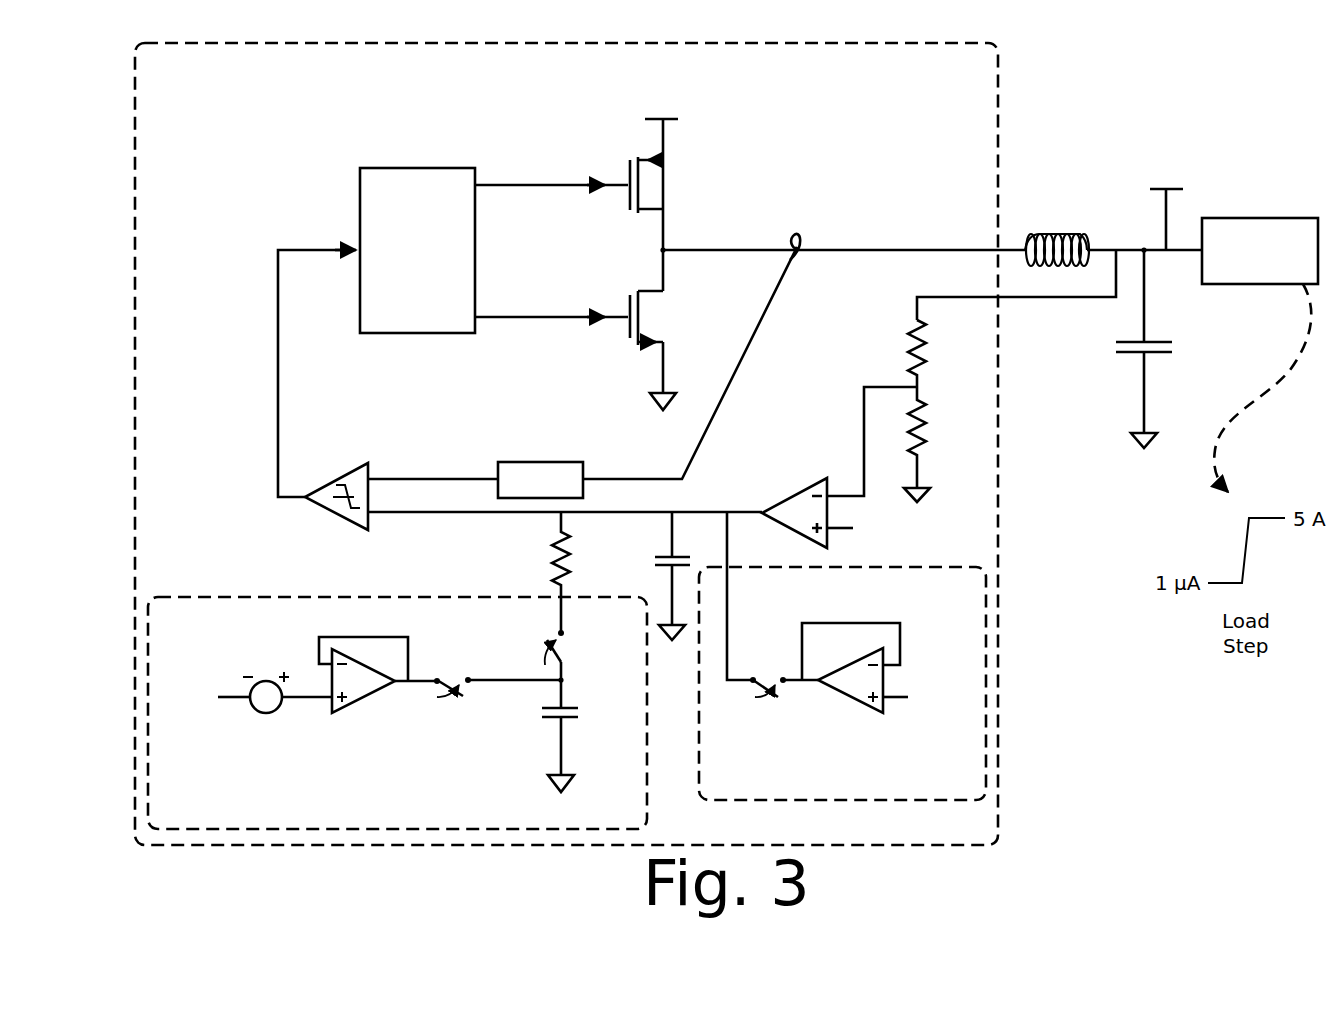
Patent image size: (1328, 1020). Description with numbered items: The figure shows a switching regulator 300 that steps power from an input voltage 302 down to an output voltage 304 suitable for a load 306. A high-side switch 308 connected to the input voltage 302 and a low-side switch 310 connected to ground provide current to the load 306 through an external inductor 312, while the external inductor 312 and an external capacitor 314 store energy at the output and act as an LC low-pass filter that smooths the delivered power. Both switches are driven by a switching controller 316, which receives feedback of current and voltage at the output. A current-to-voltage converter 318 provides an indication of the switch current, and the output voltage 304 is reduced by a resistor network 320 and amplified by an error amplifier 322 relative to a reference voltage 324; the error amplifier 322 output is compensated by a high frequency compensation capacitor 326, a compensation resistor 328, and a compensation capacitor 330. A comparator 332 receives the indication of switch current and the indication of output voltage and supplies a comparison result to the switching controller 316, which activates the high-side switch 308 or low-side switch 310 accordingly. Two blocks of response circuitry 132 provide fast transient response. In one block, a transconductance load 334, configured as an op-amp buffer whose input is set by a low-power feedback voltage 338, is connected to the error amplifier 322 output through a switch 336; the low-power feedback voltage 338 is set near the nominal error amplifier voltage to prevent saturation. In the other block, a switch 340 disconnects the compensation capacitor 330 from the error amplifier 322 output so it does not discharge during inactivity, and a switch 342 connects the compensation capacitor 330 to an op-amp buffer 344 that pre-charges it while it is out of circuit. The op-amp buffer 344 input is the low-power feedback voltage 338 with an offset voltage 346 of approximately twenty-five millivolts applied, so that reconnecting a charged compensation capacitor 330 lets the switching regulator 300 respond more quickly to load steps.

The switching regulator 300 is at (686, 74).
The input voltage 302 is at (716, 117).
The output voltage 304 is at (1225, 186).
The load 306 is at (1279, 274).
The high-side switch 308 is at (622, 146).
The low-side switch 310 is at (634, 357).
The external inductor 312 is at (1104, 221).
The external capacitor 314 is at (1258, 361).
The switching controller 316 is at (436, 287).
The current-to-voltage converter 318 is at (503, 449).
The resistor network 320 is at (975, 417).
The error amplifier 322 is at (785, 477).
The reference voltage 324 is at (938, 537).
The high frequency compensation capacitor 326 is at (643, 571).
The compensation resistor 328 is at (533, 571).
The compensation capacitor 330 is at (631, 737).
The comparator 332 is at (324, 530).
The transconductance load 334 is at (818, 606).
The switch 336 is at (793, 754).
The low-power feedback voltage 338 is at (965, 722).
The switch 340 is at (523, 657).
The switch 342 is at (470, 751).
The op-amp buffer 344 is at (324, 731).
The offset voltage 346 is at (286, 666).
The response circuitry 132 is at (511, 824).